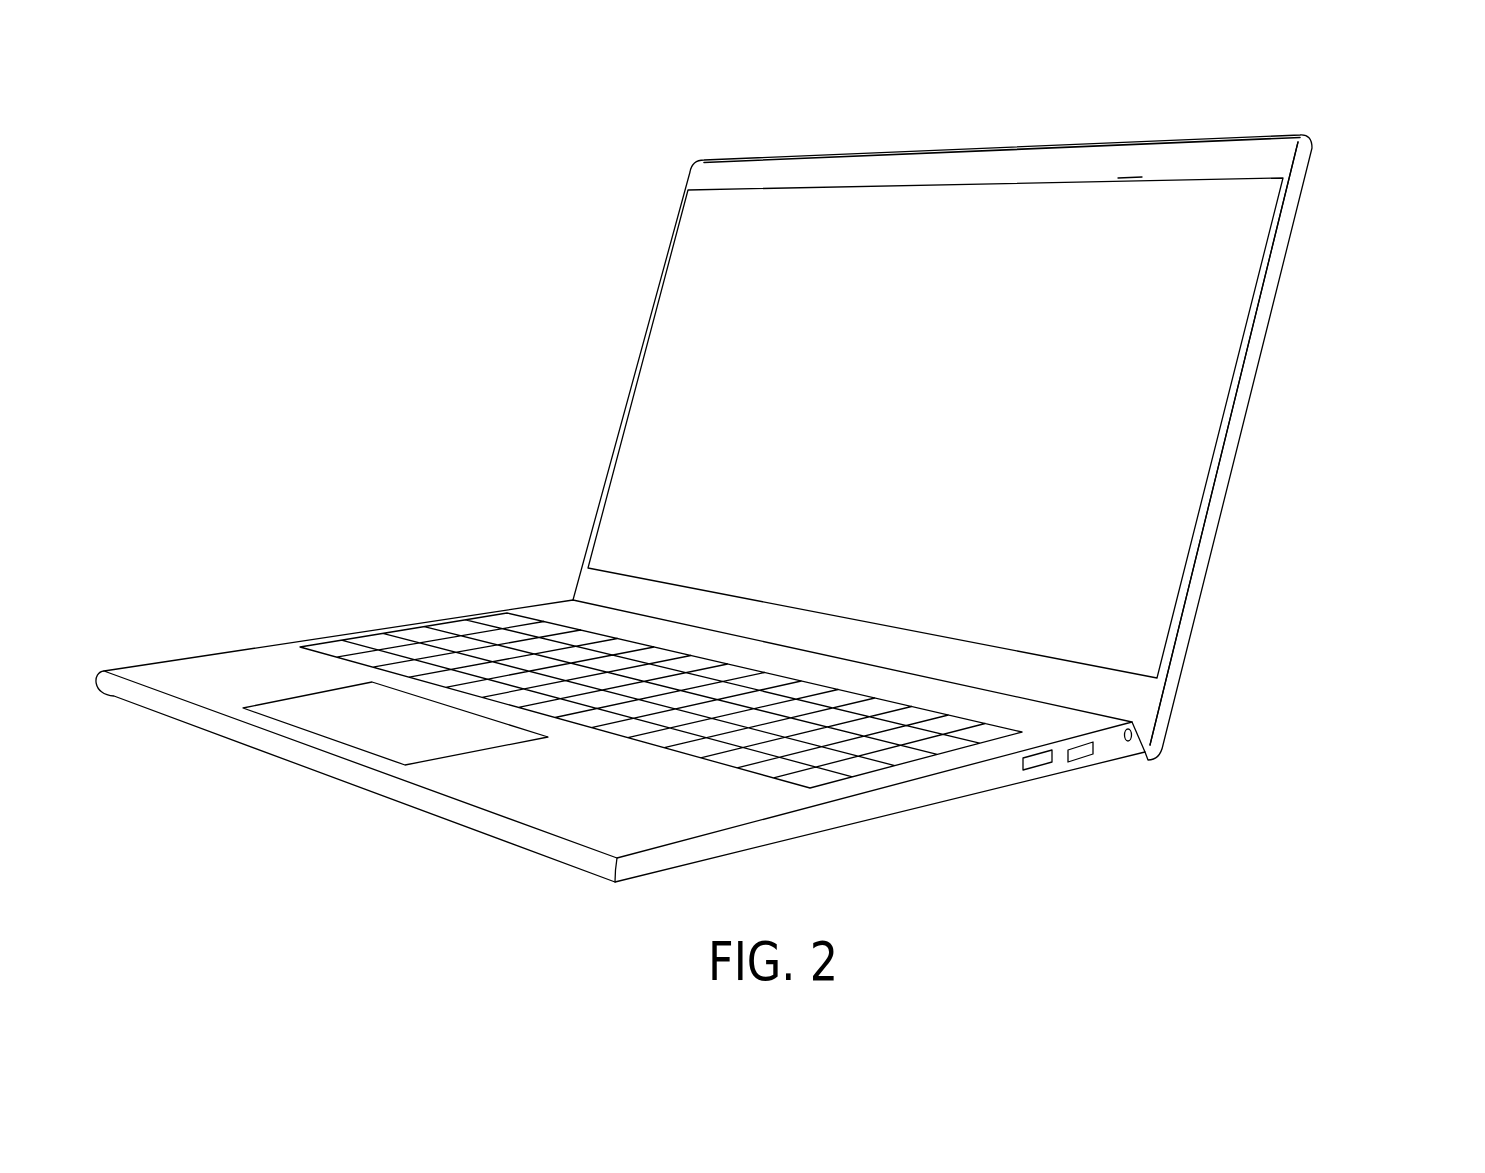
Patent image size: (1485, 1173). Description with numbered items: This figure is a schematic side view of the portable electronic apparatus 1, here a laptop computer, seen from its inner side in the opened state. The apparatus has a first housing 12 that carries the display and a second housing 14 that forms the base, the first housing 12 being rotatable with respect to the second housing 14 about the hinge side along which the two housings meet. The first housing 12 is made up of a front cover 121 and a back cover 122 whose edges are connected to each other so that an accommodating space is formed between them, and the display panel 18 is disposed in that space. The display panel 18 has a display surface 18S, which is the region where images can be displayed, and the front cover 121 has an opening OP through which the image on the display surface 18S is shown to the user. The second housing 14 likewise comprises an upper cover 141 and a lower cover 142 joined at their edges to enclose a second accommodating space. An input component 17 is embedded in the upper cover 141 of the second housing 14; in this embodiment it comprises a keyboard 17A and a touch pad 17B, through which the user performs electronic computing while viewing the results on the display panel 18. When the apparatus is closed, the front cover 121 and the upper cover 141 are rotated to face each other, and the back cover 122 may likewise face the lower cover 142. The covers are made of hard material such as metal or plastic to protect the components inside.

The portable electronic apparatus 1 is at (435, 150).
The first housing 12 is at (1423, 140).
The front cover 121 is at (1237, 162).
The back cover 122 is at (1285, 240).
The display panel 18 is at (935, 376).
The display surface 18S is at (927, 267).
The opening OP is at (1130, 170).
The second housing 14 is at (931, 832).
The upper cover 141 is at (668, 793).
The lower cover 142 is at (826, 822).
The input component 17 is at (545, 905).
The keyboard 17A is at (623, 725).
The touch pad 17B is at (447, 738).